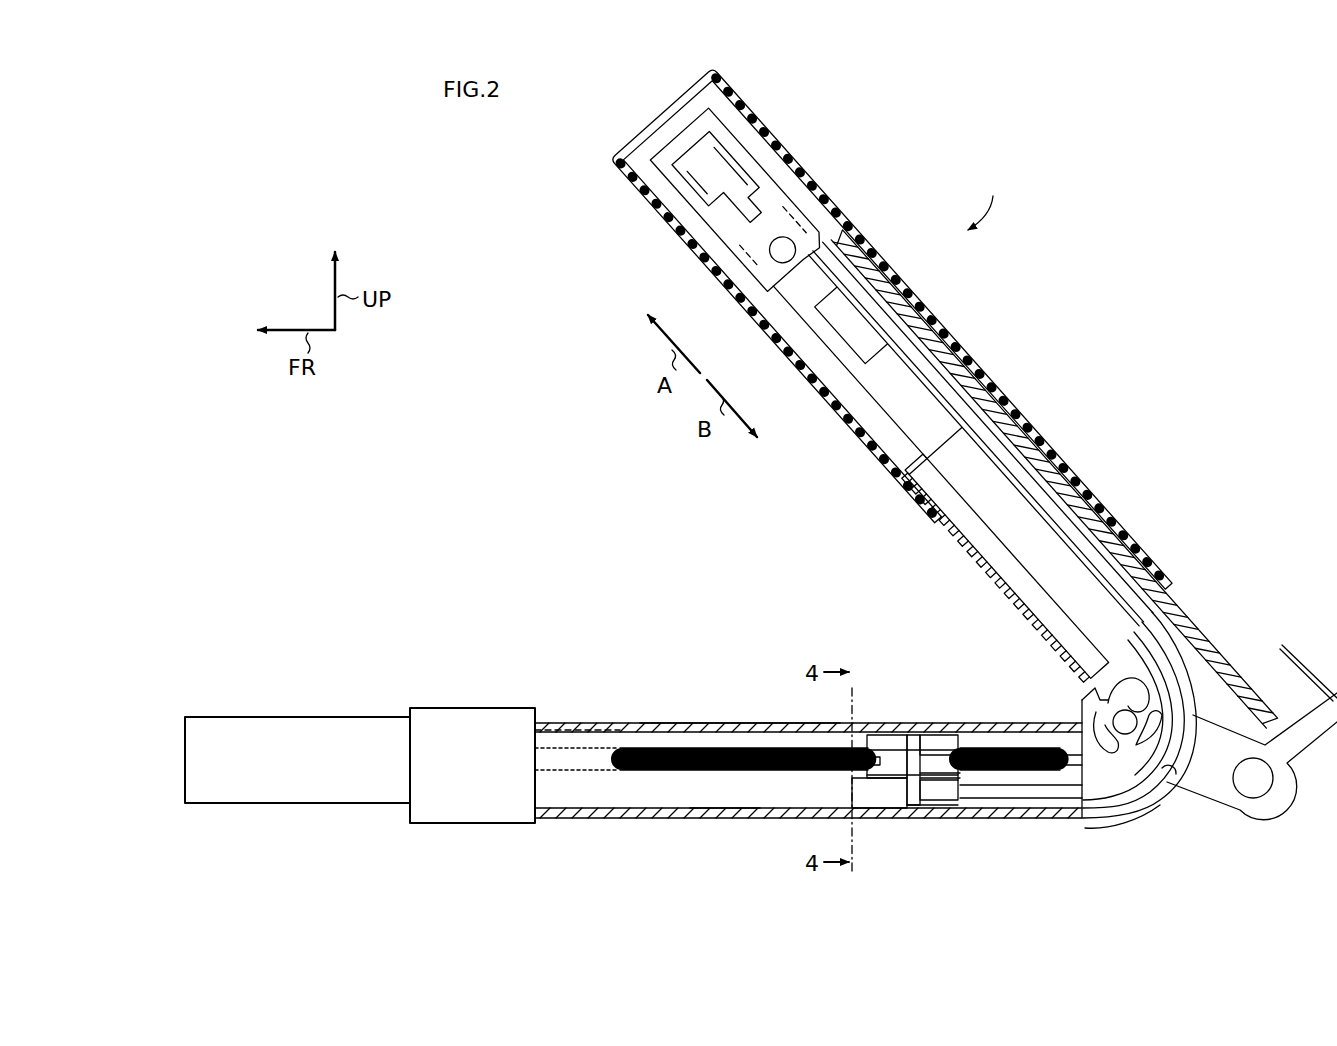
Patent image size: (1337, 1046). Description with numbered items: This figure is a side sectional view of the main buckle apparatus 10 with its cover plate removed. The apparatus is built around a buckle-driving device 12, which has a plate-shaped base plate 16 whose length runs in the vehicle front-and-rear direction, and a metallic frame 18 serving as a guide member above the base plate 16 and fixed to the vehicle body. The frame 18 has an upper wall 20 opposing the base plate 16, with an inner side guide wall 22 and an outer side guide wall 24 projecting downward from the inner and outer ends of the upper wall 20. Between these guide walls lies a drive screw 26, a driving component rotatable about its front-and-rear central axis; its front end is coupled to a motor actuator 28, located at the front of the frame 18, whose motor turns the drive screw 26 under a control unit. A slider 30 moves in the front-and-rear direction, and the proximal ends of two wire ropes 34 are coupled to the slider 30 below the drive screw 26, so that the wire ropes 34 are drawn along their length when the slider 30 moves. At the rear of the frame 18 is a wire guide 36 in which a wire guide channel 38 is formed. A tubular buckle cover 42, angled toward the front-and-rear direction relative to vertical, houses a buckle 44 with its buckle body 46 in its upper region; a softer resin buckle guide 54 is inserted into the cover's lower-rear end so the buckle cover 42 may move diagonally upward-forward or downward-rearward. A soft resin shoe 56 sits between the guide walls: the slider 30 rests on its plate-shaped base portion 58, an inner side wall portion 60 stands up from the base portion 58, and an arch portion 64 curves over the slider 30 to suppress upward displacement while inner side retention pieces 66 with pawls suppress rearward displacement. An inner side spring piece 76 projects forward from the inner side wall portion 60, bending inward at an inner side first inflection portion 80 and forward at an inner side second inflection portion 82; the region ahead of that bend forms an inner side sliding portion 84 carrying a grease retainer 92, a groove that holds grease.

The main buckle apparatus 10 is at (992, 200).
The buckle-driving device 12 is at (467, 689).
The base plate 16 is at (808, 756).
The frame 18 is at (698, 722).
The upper wall 20 is at (740, 728).
The inner side guide wall 22 is at (577, 809).
The outer side guide wall 24 is at (716, 809).
The drive screw 26 is at (625, 752).
The motor actuator 28 is at (320, 724).
The slider 30 is at (968, 723).
The wire ropes 34 is at (1060, 794).
The wire guide 36 is at (1118, 806).
The wire guide channel 38 is at (1162, 784).
The buckle cover 42 is at (981, 366).
The buckle 44 is at (792, 188).
The buckle body 46 is at (803, 214).
The buckle guide 54 is at (986, 548).
The shoe 56 is at (916, 808).
The base portion 58 is at (952, 807).
The inner side wall portion 60 is at (919, 763).
The arch portion 64 is at (953, 735).
The inner side retention pieces 66 is at (962, 783).
The inner side spring piece 76 is at (916, 733).
The inner side first inflection portion 80 is at (908, 765).
The inner side second inflection portion 82 is at (894, 758).
The inner side sliding portion 84 is at (868, 754).
The grease retainer 92 is at (866, 782).